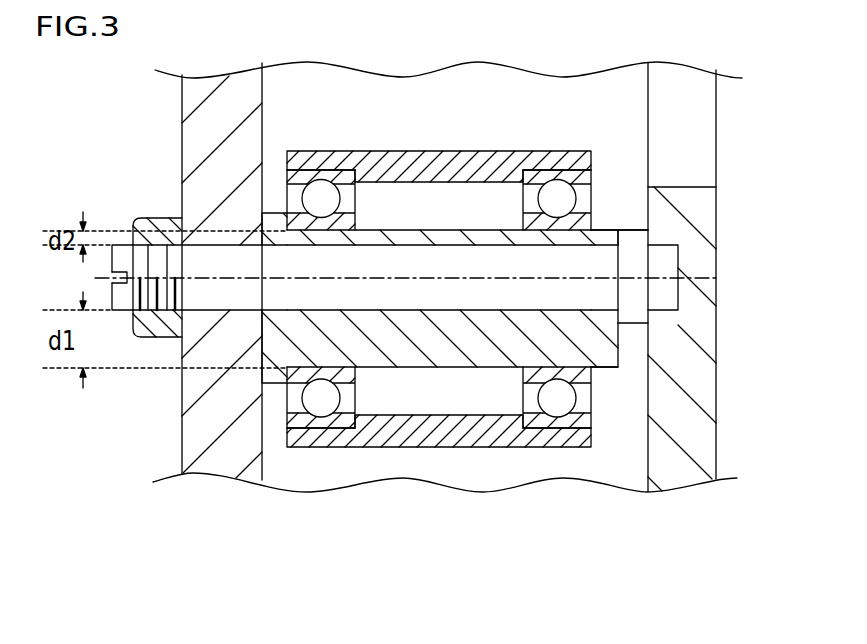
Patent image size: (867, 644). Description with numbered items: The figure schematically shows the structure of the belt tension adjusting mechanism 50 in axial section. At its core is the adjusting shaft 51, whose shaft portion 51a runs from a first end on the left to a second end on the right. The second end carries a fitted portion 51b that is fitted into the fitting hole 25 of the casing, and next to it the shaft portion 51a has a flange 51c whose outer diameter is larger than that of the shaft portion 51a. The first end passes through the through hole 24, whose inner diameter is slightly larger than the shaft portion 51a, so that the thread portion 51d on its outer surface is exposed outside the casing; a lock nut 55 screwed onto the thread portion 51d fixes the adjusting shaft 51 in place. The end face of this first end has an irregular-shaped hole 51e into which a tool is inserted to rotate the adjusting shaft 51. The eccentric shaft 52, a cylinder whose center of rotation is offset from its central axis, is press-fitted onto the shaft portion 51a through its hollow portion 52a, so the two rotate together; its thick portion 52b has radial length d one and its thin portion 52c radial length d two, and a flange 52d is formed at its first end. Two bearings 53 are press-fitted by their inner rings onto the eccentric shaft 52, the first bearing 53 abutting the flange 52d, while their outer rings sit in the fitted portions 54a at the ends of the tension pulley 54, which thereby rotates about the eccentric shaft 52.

The belt tension adjusting mechanism 50 is at (597, 118).
The fitting hole 25 is at (665, 252).
The tension pulley 54 is at (437, 152).
The fitted portion 54a is at (320, 183).
The eccentric shaft 52 is at (617, 385).
The hollow portion 52a is at (266, 297).
The thick portion 52b is at (619, 352).
The thin portion 52c is at (572, 237).
The flange 52d is at (270, 386).
The bearing 53 is at (287, 178).
The adjusting shaft 51 is at (612, 260).
The shaft portion 51a is at (420, 306).
The fitted portion 51b is at (645, 314).
The flange 51c is at (650, 318).
The thread portion 51d is at (127, 244).
The irregular-shaped hole 51e is at (112, 278).
The lock nut 55 is at (160, 219).
The through hole 24 is at (178, 298).